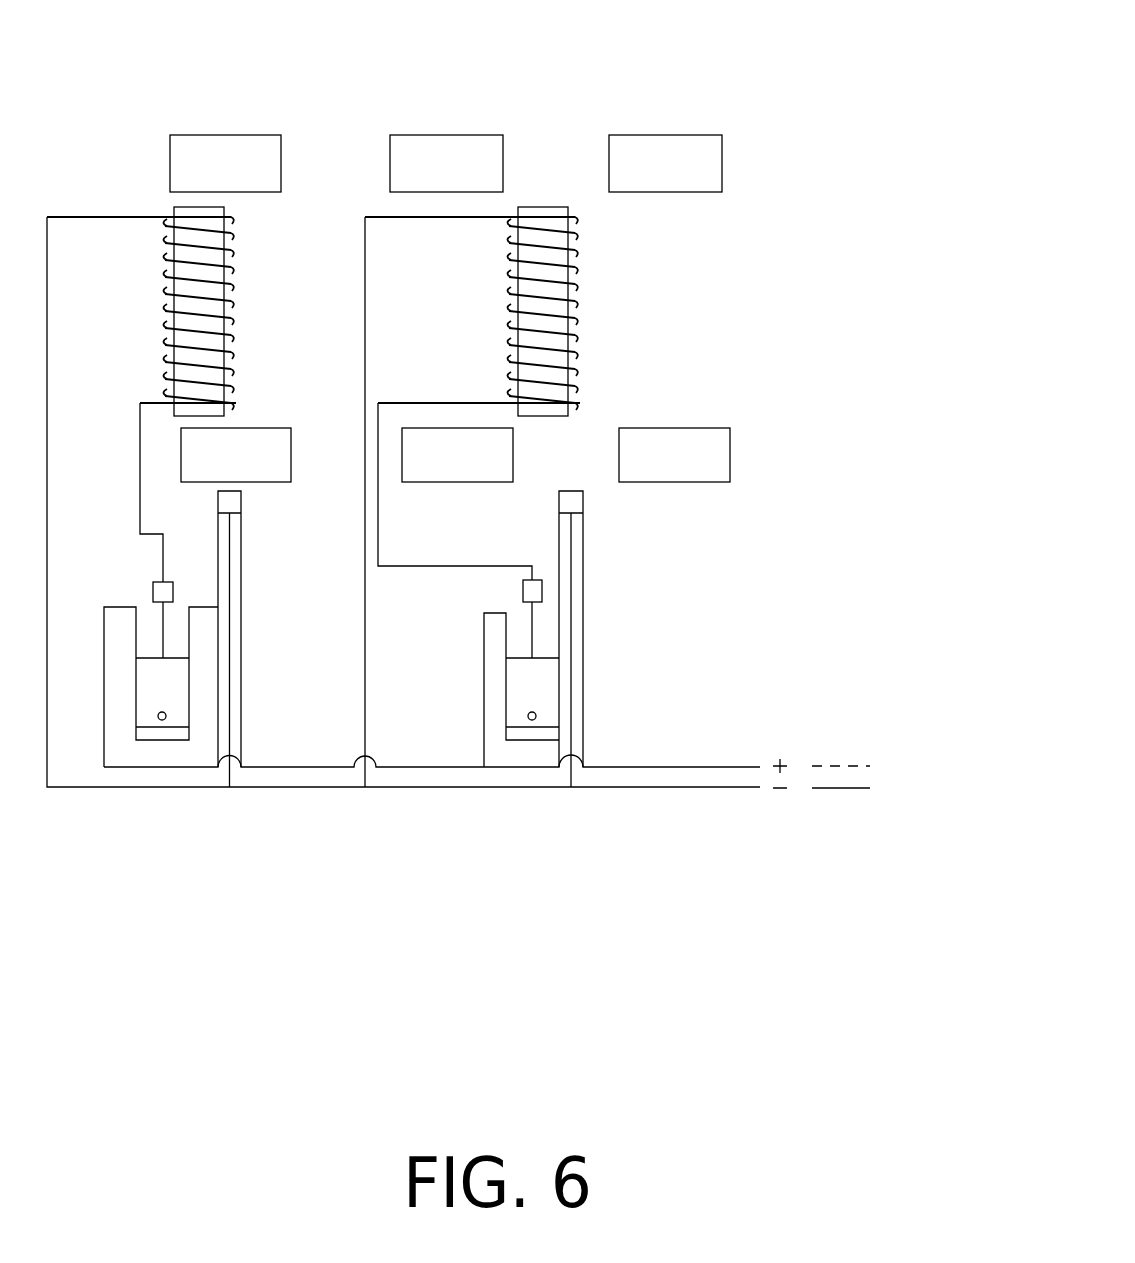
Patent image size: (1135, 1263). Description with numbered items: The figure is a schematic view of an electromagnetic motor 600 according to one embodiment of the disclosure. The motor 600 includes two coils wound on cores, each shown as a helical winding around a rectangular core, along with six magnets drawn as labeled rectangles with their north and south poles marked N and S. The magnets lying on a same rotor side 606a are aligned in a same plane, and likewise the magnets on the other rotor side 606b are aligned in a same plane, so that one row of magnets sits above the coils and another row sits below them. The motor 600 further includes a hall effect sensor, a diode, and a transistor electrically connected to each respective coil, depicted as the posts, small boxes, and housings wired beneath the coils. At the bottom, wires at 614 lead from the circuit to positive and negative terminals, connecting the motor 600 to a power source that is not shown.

The motor 600 is at (717, 76).
The rotor side 606a is at (775, 118).
The rotor side 606b is at (780, 408).
The wires 614 is at (854, 733).